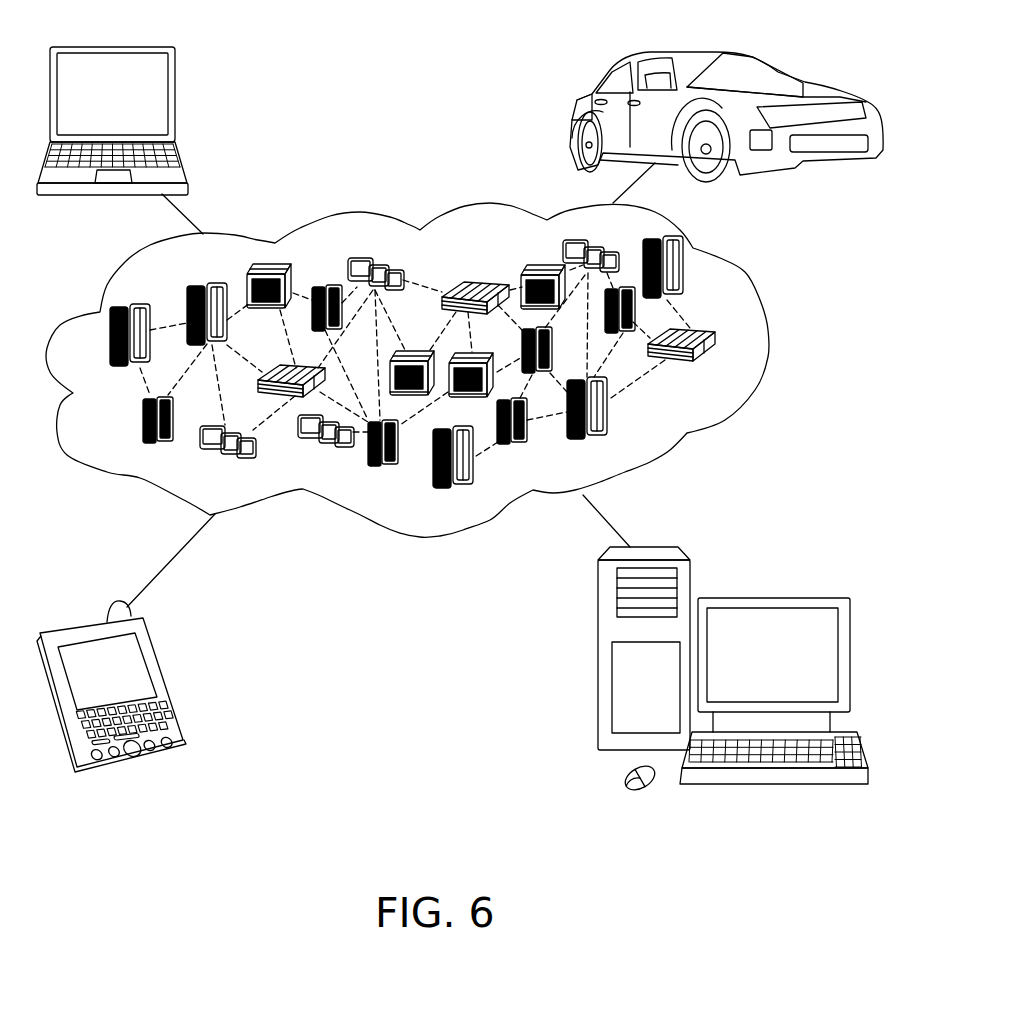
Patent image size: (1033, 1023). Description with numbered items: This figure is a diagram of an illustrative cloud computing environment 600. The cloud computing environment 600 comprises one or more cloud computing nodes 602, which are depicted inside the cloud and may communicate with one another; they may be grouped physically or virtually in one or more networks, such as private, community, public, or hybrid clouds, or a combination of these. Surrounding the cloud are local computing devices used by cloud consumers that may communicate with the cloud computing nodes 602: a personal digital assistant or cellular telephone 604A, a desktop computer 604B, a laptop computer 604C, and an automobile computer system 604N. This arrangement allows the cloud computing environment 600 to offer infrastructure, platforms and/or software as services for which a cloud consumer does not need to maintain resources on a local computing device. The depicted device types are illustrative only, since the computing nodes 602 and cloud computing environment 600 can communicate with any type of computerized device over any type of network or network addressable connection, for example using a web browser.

The cloud computing environment 600 is at (725, 338).
The cloud computing nodes 602 is at (721, 373).
The personal digital assistant (PDA) or cellular telephone 604A is at (156, 653).
The desktop computer 604B is at (760, 597).
The laptop computer 604C is at (177, 75).
The automobile computer system 604N is at (573, 120).